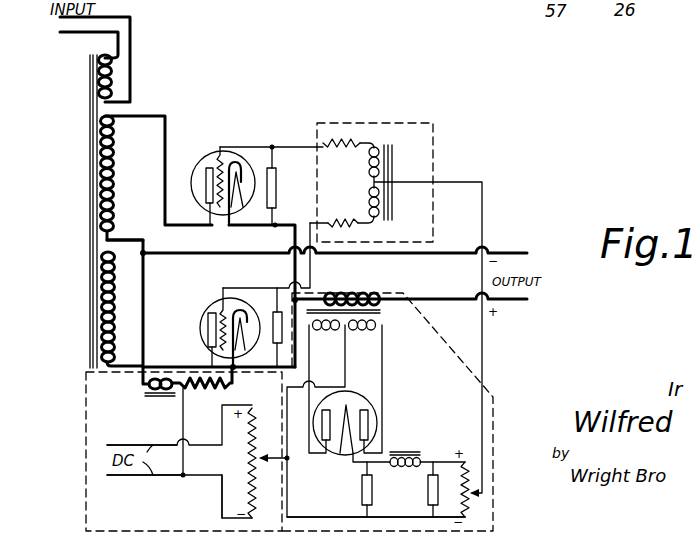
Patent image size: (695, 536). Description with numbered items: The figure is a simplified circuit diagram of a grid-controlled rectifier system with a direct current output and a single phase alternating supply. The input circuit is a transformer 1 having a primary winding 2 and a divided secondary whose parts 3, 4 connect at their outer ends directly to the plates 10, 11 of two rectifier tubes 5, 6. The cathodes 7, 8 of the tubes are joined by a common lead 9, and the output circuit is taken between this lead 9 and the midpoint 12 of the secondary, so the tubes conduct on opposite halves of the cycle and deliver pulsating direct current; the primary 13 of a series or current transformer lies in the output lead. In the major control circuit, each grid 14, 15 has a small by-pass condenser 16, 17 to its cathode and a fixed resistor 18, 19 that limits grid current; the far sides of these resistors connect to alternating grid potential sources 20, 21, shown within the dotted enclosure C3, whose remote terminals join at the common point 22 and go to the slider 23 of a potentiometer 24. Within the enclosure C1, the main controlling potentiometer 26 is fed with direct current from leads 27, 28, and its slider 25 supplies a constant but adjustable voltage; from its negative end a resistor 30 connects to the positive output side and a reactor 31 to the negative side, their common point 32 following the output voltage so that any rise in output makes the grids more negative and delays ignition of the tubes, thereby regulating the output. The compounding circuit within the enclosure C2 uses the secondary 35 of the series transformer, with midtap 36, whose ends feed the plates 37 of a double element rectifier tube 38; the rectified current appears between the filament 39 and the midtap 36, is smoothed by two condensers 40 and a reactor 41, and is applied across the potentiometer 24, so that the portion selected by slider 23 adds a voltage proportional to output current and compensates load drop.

The transformer 1 is at (90, 160).
The primary winding 2 is at (92, 85).
The secondary winding part 3 is at (112, 190).
The secondary winding part 4 is at (100, 297).
The rectifier tube 5 is at (222, 155).
The rectifier tube 6 is at (207, 305).
The cathode 7 is at (240, 163).
The cathode 8 is at (242, 308).
The lead 9 is at (294, 243).
The plate 10 is at (208, 168).
The plate 11 is at (206, 323).
The midpoint of the secondary 12 is at (110, 240).
The primary of series transformer 13 is at (368, 296).
The grid 14 is at (226, 160).
The grid 15 is at (224, 308).
The by-pass condenser 16 is at (279, 188).
The by-pass condenser 17 is at (272, 348).
The fixed resistor 18 is at (343, 141).
The fixed resistor 19 is at (332, 221).
The alternating potential source 20 is at (380, 147).
The alternating potential source 21 is at (386, 208).
The common point 22 is at (372, 183).
The slider 23 is at (472, 500).
The potentiometer 24 is at (470, 478).
The slider 25 is at (252, 455).
The main controlling potentiometer 26 is at (252, 485).
The lead 27 is at (115, 445).
The lead 28 is at (117, 475).
The resistor 30 is at (193, 395).
The reactor 31 is at (147, 388).
The common point 32 is at (178, 378).
The secondary of series transformer 35 is at (330, 331).
The midtap 36 is at (362, 331).
The plates 37 is at (366, 410).
The double element rectifier tube 38 is at (370, 420).
The filament 39 is at (340, 448).
The condensers 40 is at (362, 492).
The reactor 41 is at (404, 456).
The dotted line enclosure C1 is at (86, 496).
The dotted line enclosure C2 is at (493, 397).
The dotted line enclosure C3 is at (433, 135).